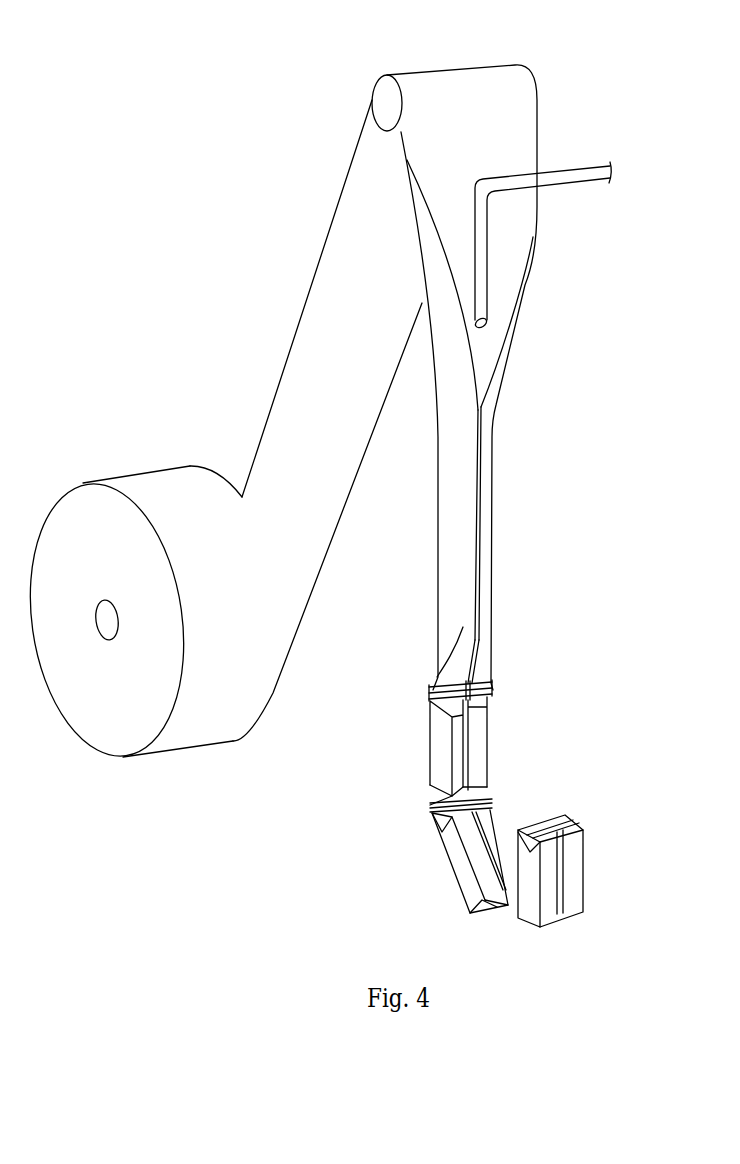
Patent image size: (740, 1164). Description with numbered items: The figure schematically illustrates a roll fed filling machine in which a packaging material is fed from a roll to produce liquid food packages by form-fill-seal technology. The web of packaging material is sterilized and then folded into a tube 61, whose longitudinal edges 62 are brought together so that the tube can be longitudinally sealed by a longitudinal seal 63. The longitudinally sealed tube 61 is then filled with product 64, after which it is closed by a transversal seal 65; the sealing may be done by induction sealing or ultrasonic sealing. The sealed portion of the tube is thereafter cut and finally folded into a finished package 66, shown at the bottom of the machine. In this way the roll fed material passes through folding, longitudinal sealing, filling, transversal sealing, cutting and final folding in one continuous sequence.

The tube 61 is at (457, 488).
The longitudinal edges of the web 62 is at (447, 263).
The longitudinal seal 63 is at (490, 437).
The product 64 is at (573, 166).
The transversal seal 65 is at (483, 690).
The package 66 is at (576, 868).